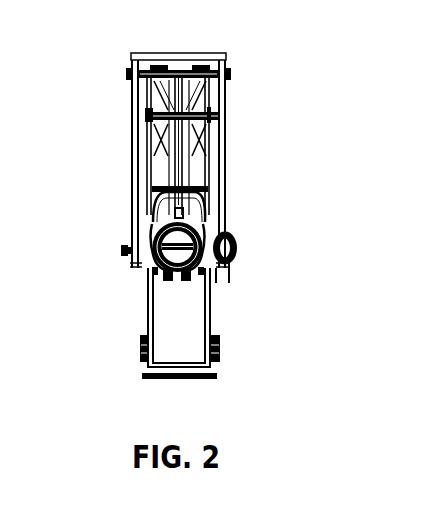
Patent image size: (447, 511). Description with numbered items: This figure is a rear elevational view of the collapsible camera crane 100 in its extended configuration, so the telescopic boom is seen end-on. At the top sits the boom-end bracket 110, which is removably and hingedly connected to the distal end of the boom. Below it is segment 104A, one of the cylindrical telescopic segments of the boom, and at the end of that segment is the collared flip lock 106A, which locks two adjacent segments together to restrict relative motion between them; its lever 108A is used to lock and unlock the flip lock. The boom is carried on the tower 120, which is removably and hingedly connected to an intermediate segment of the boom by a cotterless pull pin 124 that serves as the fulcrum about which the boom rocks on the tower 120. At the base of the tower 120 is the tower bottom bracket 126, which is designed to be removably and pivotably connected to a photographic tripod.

The collapsible camera crane 100 is at (112, 50).
The boom-end bracket 110 is at (182, 53).
The segment 104A is at (183, 238).
The collared flip lock 106A is at (235, 259).
The lever 108A is at (156, 222).
The cotterless pull pin 124 is at (122, 251).
The tower 120 is at (148, 304).
The tower bottom bracket 126 is at (218, 372).